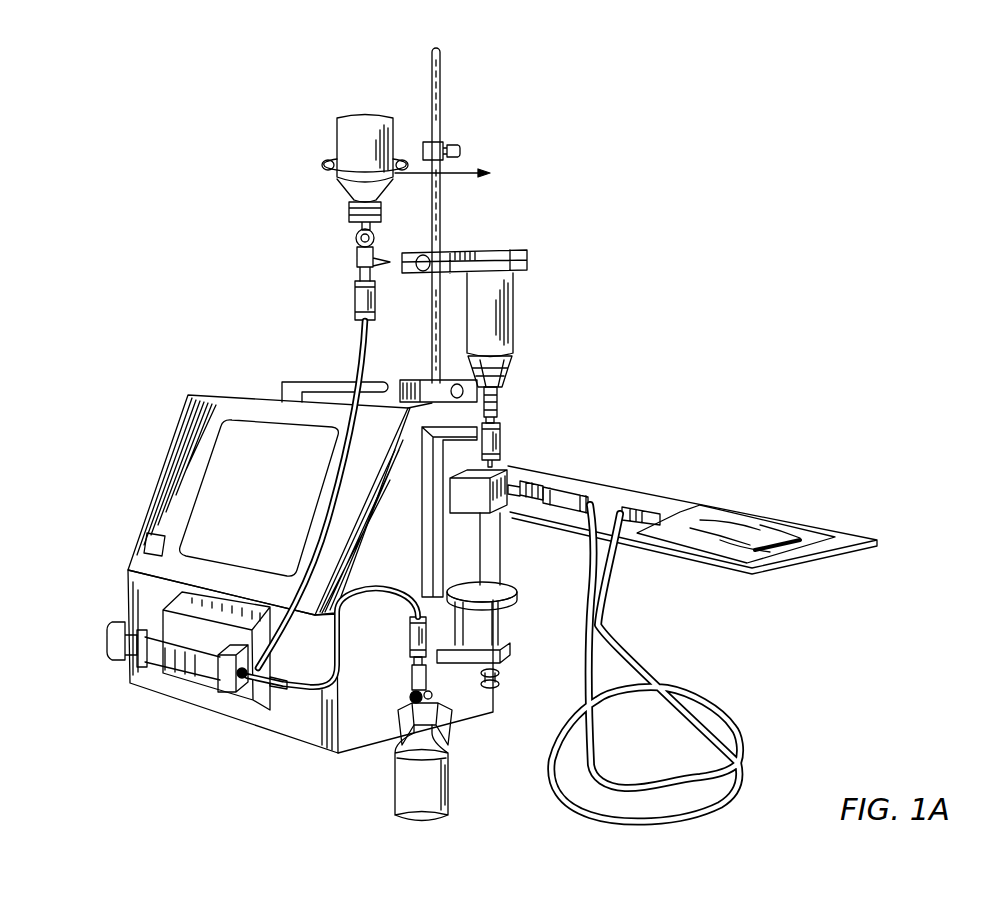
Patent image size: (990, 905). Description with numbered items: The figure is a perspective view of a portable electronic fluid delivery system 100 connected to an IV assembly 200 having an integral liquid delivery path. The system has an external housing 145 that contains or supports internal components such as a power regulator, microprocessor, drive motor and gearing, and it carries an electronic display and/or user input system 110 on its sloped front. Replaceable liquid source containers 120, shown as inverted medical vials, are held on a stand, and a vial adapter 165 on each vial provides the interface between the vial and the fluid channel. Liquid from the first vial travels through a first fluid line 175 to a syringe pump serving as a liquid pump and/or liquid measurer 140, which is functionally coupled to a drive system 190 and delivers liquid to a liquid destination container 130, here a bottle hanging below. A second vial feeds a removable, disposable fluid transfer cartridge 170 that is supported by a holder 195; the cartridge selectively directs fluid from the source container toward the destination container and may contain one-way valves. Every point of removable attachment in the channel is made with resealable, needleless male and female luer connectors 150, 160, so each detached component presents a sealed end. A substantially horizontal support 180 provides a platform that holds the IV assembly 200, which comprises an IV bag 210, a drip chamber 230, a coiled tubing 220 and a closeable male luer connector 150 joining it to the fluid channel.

The electronic fluid delivery system 100 is at (220, 345).
The electronic display and/or user input system 110 is at (205, 500).
The liquid source container 120 is at (352, 115).
The liquid destination container 130 is at (393, 789).
The liquid pump and/or liquid measurer 140 is at (167, 660).
The external housing 145 is at (130, 593).
The closeable male luer connector 150 is at (353, 300).
The female luer connector 160 is at (355, 252).
The vial adapter 165 is at (378, 238).
The fluid transfer cartridge 170 is at (455, 457).
The first fluid line 175 is at (357, 362).
The support 180 is at (832, 535).
The drive system 190 is at (107, 643).
The holder 195 is at (460, 497).
The IV assembly 200 is at (703, 634).
The IV bag 210 is at (732, 520).
The tubing 220 is at (727, 703).
The drip chamber 230 is at (632, 528).